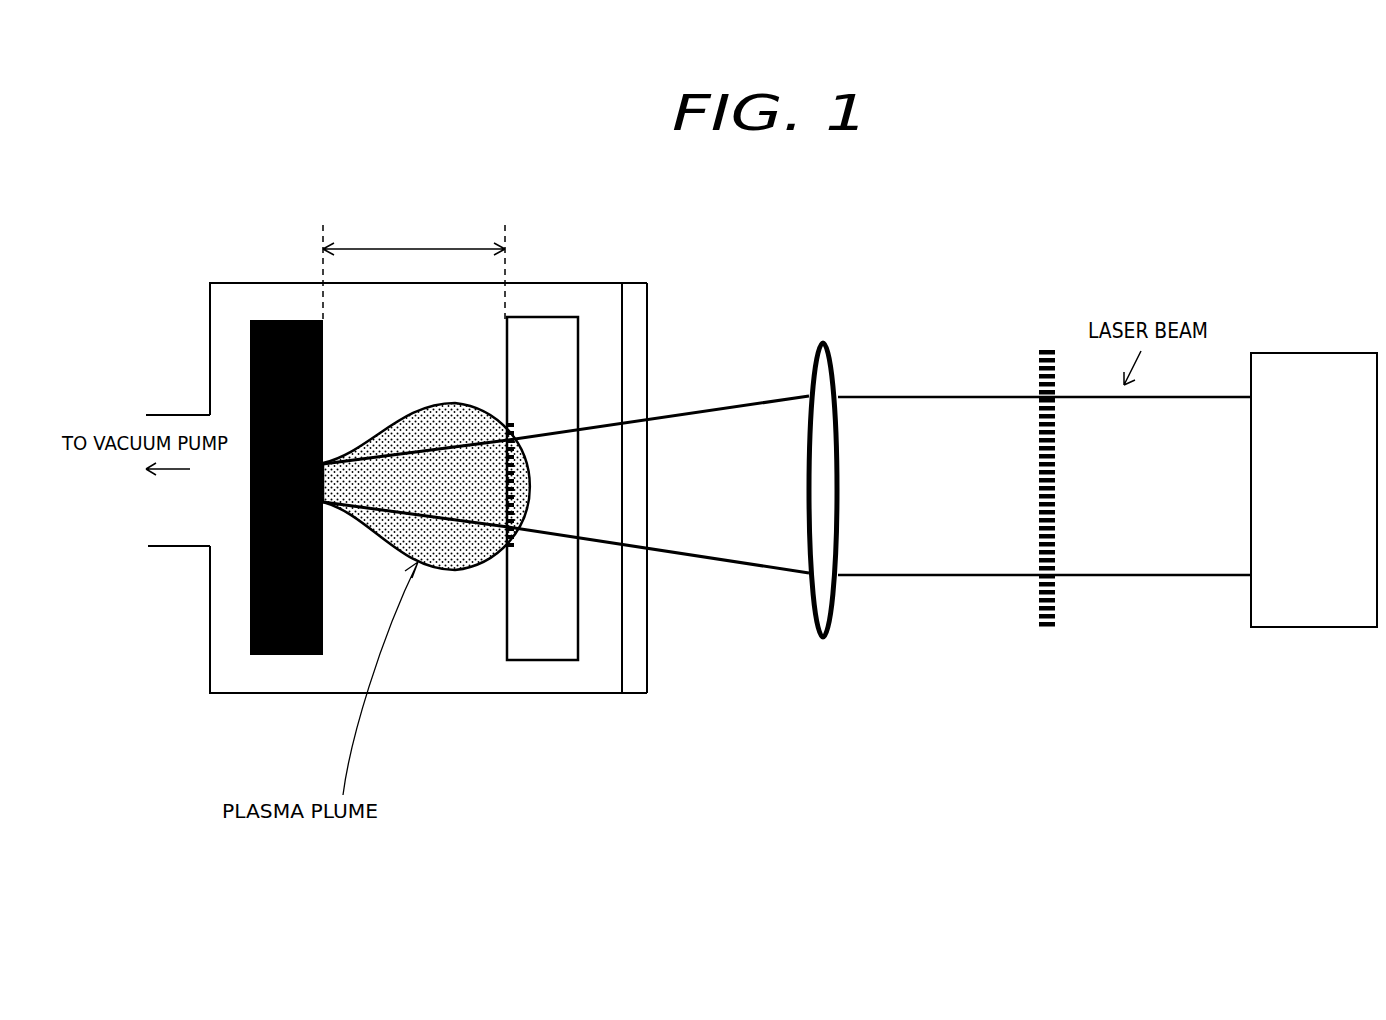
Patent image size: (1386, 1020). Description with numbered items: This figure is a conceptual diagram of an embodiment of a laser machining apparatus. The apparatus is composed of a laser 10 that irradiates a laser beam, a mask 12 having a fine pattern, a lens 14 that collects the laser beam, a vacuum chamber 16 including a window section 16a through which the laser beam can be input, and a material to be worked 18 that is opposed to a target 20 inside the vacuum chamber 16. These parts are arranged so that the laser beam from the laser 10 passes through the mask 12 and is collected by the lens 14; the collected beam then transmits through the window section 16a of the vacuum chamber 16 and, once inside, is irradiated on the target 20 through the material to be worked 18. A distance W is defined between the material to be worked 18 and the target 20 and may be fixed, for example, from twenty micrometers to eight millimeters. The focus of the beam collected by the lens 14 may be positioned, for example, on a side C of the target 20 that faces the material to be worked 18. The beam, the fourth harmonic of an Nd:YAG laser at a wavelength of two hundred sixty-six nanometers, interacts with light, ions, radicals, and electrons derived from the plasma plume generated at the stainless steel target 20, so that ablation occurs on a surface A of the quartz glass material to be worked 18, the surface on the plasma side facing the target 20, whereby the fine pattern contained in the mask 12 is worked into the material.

The laser 10 is at (1305, 365).
The mask 12 is at (1045, 632).
The lens 14 is at (831, 622).
The vacuum chamber 16 is at (482, 696).
The window section 16a is at (637, 678).
The material to be worked 18 is at (567, 655).
The target 20 is at (292, 655).
The surface A is at (506, 617).
The side C is at (250, 335).
The distance W is at (414, 270).